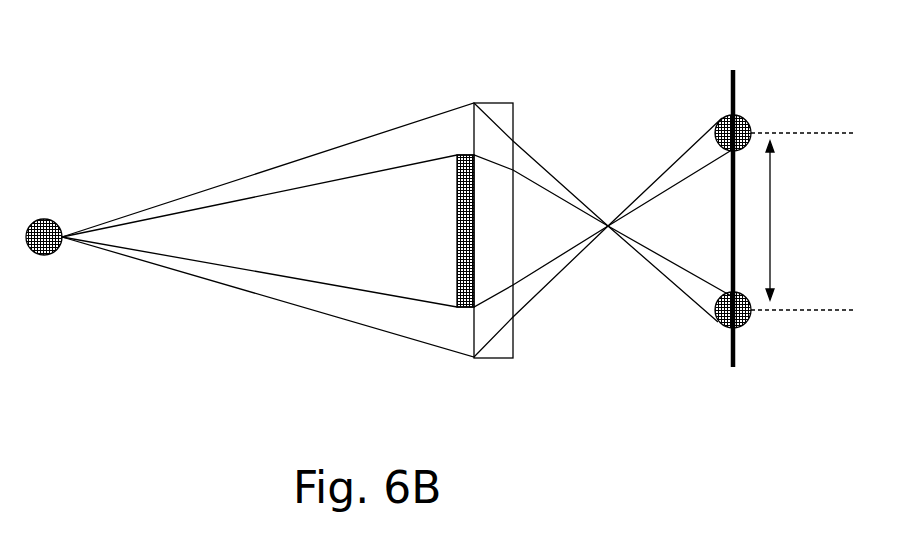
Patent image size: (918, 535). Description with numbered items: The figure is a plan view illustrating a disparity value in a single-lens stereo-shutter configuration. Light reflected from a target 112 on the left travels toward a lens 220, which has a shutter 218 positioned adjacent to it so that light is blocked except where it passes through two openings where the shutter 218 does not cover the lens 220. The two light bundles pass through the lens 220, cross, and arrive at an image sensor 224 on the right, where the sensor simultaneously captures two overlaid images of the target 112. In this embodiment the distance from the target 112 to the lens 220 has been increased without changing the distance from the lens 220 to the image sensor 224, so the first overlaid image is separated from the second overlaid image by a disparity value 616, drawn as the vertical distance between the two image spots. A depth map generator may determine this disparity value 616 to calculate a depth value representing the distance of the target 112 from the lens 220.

The target 112 is at (56, 222).
The lens 220 is at (496, 103).
The shutter 218 is at (457, 221).
The image sensor 224 is at (734, 72).
The disparity value 616 is at (770, 258).